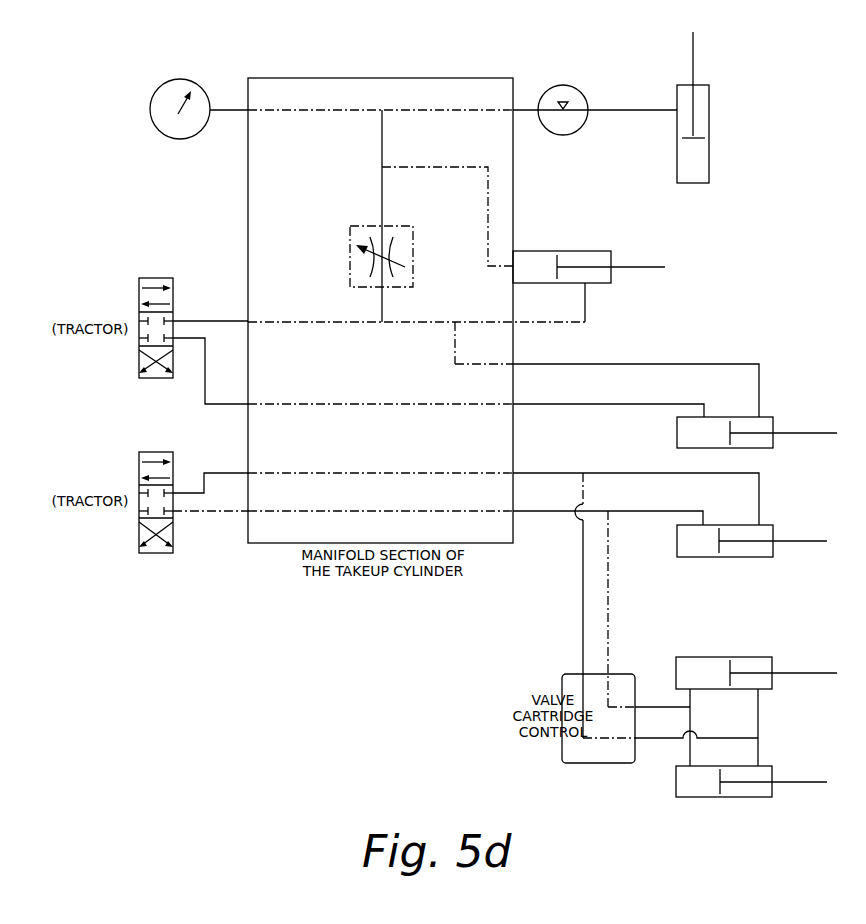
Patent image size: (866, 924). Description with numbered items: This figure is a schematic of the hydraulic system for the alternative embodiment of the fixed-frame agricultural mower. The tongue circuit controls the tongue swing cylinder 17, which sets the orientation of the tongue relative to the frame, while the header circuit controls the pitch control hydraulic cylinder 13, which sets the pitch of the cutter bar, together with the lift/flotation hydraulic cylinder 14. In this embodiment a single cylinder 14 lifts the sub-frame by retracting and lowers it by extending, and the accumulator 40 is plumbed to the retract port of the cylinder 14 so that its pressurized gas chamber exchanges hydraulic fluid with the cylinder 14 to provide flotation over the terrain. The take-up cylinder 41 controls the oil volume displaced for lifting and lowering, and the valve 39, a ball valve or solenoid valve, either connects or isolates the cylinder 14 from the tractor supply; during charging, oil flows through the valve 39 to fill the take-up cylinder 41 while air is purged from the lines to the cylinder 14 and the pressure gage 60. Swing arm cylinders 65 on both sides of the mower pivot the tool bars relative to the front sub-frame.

The pressure gage 60 is at (162, 104).
The accumulator 40 is at (578, 125).
The hydraulic cylinder 14 is at (688, 170).
The valve 39 is at (367, 226).
The take-up cylinder 41 is at (537, 255).
The pitch control hydraulic cylinder 13 is at (685, 432).
The tongue swing cylinder 17 is at (685, 541).
The swing arm cylinders 65 is at (765, 662).